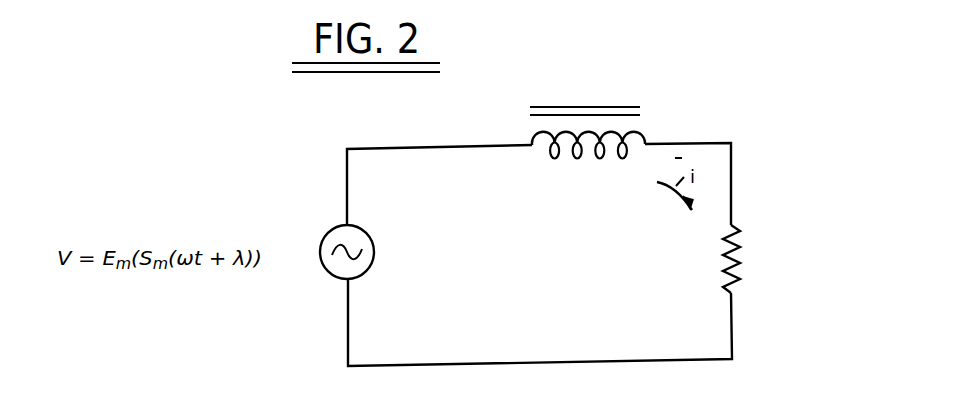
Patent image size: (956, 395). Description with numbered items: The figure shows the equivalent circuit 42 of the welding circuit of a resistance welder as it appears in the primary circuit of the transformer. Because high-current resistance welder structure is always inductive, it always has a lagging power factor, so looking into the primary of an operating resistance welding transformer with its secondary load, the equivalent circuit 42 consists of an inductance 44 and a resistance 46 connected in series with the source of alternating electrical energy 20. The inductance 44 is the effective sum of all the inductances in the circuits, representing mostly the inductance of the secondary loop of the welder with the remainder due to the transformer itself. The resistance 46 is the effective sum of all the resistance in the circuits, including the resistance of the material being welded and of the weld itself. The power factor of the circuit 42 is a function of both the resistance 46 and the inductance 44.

The source of alternating electrical energy 20 is at (374, 250).
The equivalent circuit 42 is at (315, 323).
The inductance 44 is at (578, 158).
The resistance 46 is at (724, 269).